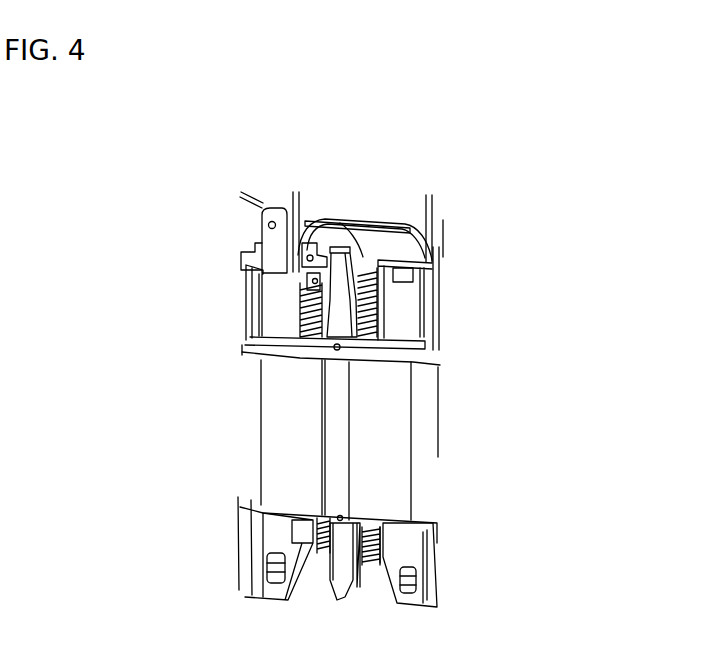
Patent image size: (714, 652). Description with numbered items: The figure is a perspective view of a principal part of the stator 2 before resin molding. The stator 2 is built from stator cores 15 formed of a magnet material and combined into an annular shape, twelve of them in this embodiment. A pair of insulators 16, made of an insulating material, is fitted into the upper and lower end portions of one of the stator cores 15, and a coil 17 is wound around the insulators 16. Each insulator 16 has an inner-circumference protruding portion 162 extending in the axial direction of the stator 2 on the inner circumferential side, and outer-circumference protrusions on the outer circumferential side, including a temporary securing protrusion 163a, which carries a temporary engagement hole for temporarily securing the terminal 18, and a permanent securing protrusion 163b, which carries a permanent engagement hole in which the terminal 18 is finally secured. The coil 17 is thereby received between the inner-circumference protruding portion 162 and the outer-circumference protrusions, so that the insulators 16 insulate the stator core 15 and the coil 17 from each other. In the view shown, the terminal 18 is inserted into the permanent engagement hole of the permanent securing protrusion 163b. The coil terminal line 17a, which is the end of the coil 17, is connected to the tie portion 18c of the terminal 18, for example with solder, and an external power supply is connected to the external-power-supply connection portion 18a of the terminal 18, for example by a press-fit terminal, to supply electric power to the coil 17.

The stator 2 is at (219, 210).
The stator core 15 is at (433, 404).
The insulator 16 is at (422, 348).
The coil 17 is at (315, 300).
The coil terminal line 17a is at (346, 222).
The terminal 18 is at (256, 254).
The external-power-supply connection portion 18a is at (271, 210).
The tie portion 18c is at (353, 262).
The inner-circumference protruding portion 162 is at (413, 225).
The temporary securing protrusion 163a is at (438, 265).
The permanent securing protrusion 163b is at (246, 300).